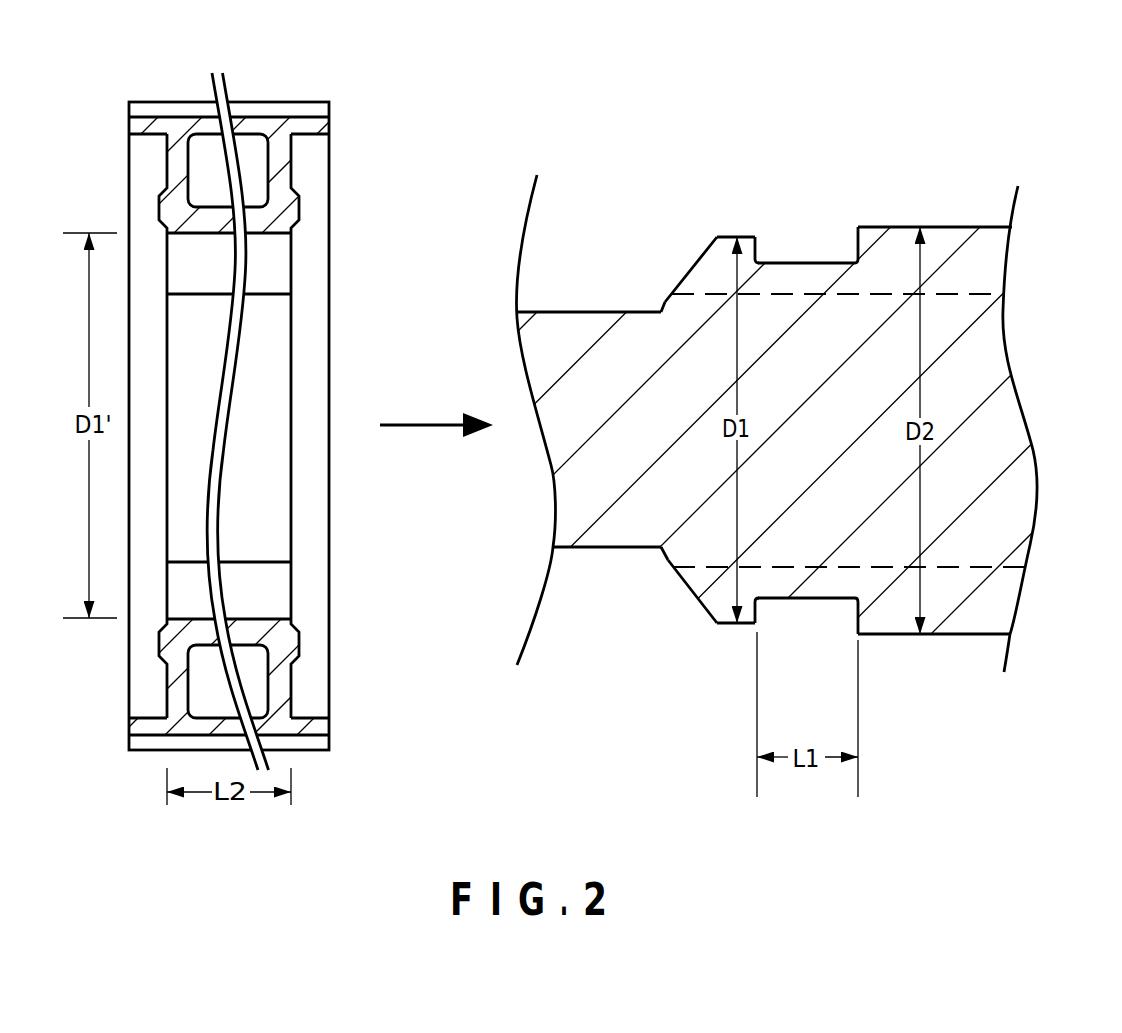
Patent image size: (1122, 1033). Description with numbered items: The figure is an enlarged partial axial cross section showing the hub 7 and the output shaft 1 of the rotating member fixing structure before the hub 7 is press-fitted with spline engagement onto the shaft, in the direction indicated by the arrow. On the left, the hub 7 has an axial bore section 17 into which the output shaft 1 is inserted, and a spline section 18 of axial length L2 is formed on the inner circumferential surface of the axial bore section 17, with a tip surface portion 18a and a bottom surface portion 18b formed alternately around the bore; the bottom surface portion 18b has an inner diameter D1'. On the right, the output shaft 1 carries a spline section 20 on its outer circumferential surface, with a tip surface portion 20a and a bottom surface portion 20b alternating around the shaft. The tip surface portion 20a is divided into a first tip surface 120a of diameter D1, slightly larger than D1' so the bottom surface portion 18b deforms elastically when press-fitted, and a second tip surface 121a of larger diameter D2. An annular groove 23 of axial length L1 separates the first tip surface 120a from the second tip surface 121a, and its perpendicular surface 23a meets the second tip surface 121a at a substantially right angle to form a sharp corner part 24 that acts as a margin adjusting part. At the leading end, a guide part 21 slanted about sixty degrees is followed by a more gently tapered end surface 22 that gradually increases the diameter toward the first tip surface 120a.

The output shaft 1 is at (665, 406).
The hub 7 is at (353, 96).
The axial bore section 17 is at (280, 551).
The spline section 18 is at (298, 426).
The tip surface portion 18a is at (270, 298).
The bottom surface portion 18b is at (270, 246).
The spline section 20 is at (934, 205).
The tip surface portion 20a is at (796, 395).
The bottom surface portion 20b is at (977, 293).
The guide part 21 is at (662, 302).
The tapered end surface 22 is at (697, 262).
The annular groove 23 is at (786, 256).
The perpendicular surface 23a is at (858, 242).
The corner part 24 is at (858, 228).
The first tip surface 120a is at (745, 236).
The second tip surface 121a is at (880, 227).